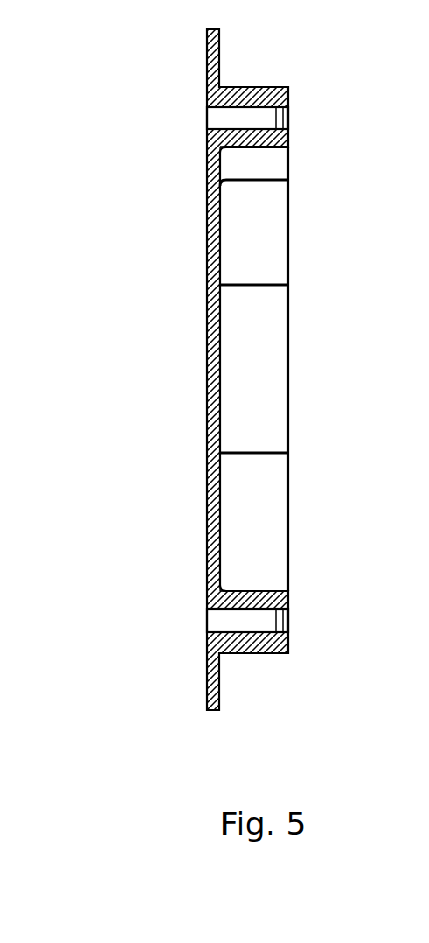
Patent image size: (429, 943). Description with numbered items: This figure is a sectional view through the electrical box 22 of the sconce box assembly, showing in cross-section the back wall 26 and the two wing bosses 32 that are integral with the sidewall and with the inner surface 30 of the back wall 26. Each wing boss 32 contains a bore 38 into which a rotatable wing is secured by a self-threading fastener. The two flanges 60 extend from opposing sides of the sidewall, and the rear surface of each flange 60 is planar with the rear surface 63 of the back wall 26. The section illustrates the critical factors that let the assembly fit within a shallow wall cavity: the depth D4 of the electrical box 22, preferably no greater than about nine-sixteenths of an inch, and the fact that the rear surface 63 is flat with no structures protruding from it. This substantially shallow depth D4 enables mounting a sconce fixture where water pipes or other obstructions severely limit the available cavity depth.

The electrical box 22 is at (128, 120).
The back wall 26 is at (207, 345).
The rear surface 63 is at (207, 393).
The flange 60 is at (219, 53).
The wing boss 32 is at (257, 138).
The bore 38 is at (247, 620).
The inner surface 30 is at (232, 398).
The depth D4 is at (153, 303).